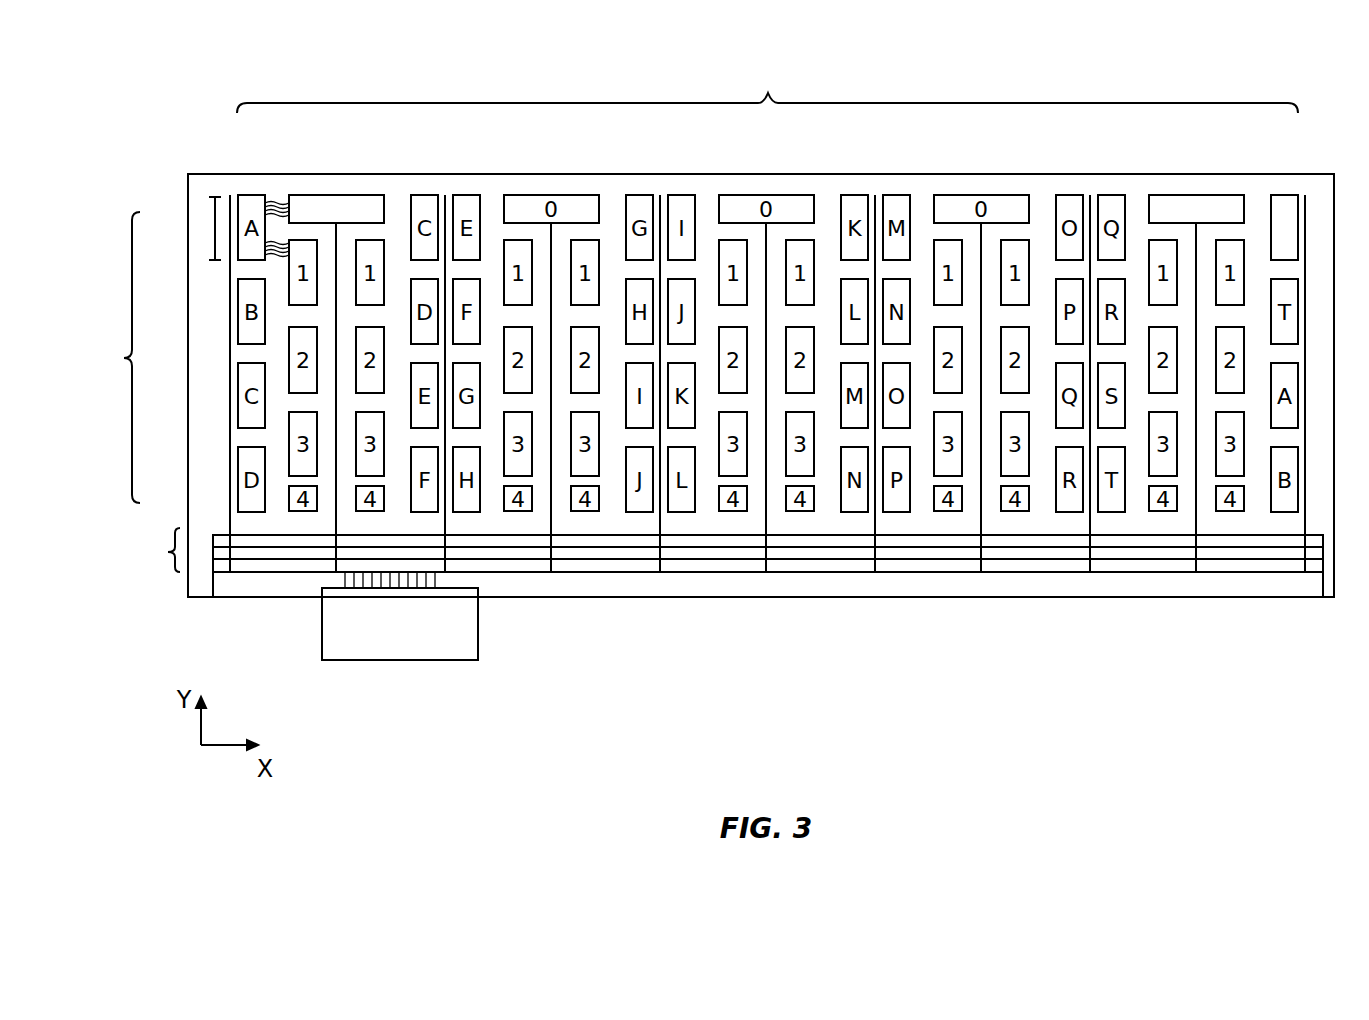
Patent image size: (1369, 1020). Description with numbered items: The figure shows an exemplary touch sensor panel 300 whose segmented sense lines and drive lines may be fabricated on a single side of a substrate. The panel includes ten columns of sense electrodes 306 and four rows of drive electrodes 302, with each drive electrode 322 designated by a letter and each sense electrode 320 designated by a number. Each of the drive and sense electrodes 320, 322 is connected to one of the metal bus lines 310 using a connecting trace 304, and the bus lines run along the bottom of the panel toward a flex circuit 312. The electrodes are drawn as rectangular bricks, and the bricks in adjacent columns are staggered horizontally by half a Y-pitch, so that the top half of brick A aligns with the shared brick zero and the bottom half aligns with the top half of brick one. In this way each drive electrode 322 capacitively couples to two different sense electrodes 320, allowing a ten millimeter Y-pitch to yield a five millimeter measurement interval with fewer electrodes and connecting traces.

The touch sensor panel 300 is at (1140, 60).
The rows of drive electrodes 302 is at (147, 350).
The connecting trace 304 is at (229, 552).
The columns of sense electrodes 306 is at (767, 103).
The metal bus lines 310 is at (677, 555).
The flex circuit 312 is at (478, 642).
The sense electrode 320 is at (334, 195).
The drive electrode 322 is at (1284, 195).